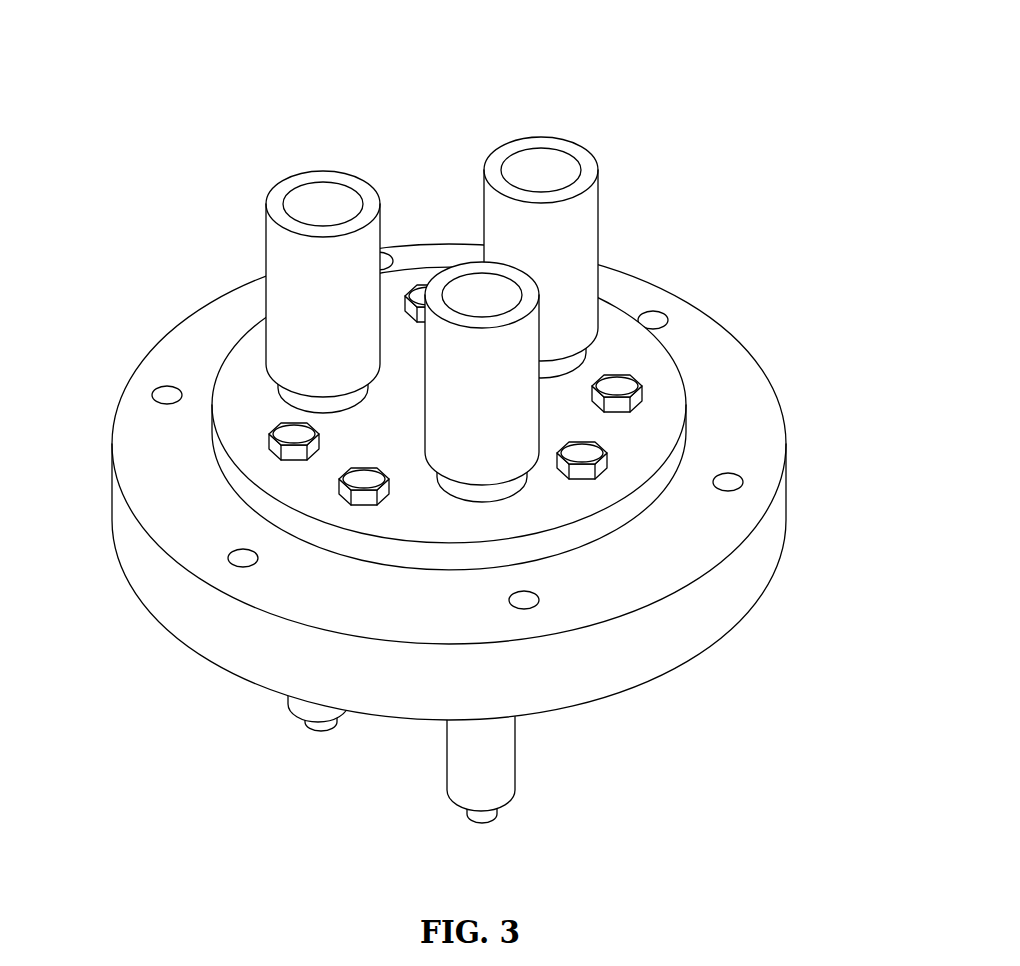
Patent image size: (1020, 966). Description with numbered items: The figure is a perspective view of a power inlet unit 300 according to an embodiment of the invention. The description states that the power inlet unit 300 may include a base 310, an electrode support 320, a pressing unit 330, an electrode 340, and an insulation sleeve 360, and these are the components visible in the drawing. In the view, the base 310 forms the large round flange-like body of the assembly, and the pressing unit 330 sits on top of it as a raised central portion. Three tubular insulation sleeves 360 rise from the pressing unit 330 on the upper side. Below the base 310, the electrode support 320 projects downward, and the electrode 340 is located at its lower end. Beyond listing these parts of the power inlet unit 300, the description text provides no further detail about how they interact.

The power inlet unit 300 is at (791, 43).
The base 310 is at (772, 388).
The electrode support 320 is at (516, 773).
The pressing unit 330 is at (253, 452).
The electrode 340 is at (468, 823).
The insulation sleeve 360 is at (585, 214).